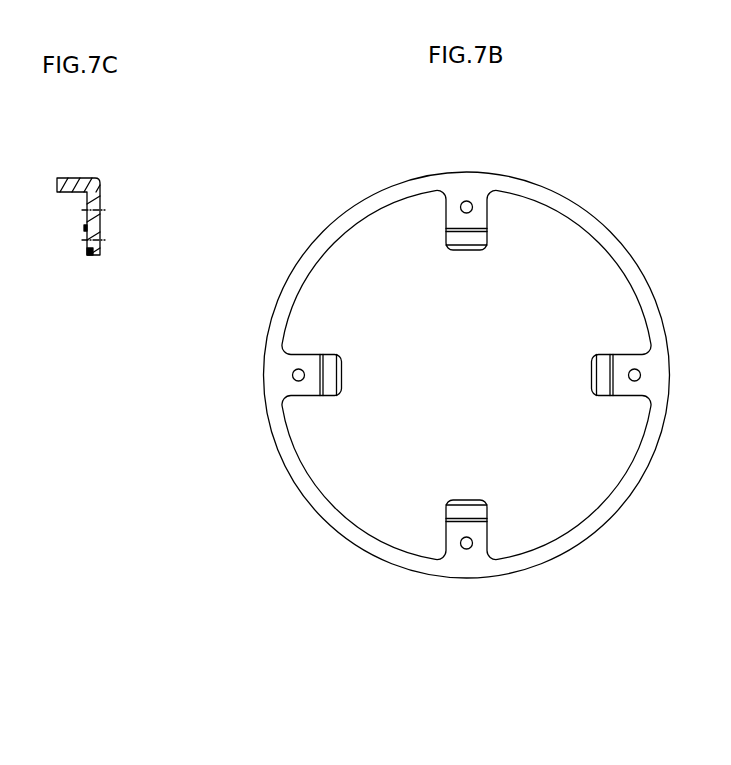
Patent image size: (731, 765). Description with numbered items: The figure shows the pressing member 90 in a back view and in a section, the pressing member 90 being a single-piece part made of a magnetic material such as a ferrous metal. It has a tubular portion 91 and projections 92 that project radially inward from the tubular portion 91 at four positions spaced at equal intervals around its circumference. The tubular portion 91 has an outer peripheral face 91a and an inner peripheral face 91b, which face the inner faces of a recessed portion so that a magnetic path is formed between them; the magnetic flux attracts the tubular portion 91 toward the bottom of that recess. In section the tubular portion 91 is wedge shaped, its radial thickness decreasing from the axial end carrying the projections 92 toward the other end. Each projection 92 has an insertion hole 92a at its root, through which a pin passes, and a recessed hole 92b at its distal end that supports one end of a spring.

In FIG. 7B, the pressing member 90 is at (340, 173).
In FIG. 7B, the tubular portion 91 is at (533, 188).
In FIG. 7C, the tubular portion 91 is at (78, 180).
In FIG. 7B, the outer peripheral face 91a is at (622, 244).
In FIG. 7C, the outer peripheral face 91a is at (88, 177).
In FIG. 7B, the inner peripheral face 91b is at (607, 248).
In FIG. 7C, the inner peripheral face 91b is at (72, 192).
In FIG. 7B, the projection 92 is at (461, 251).
In FIG. 7B, the insertion hole 92a is at (465, 200).
In FIG. 7C, the insertion hole 92a is at (100, 205).
In FIG. 7C, the recessed hole 92b is at (85, 245).